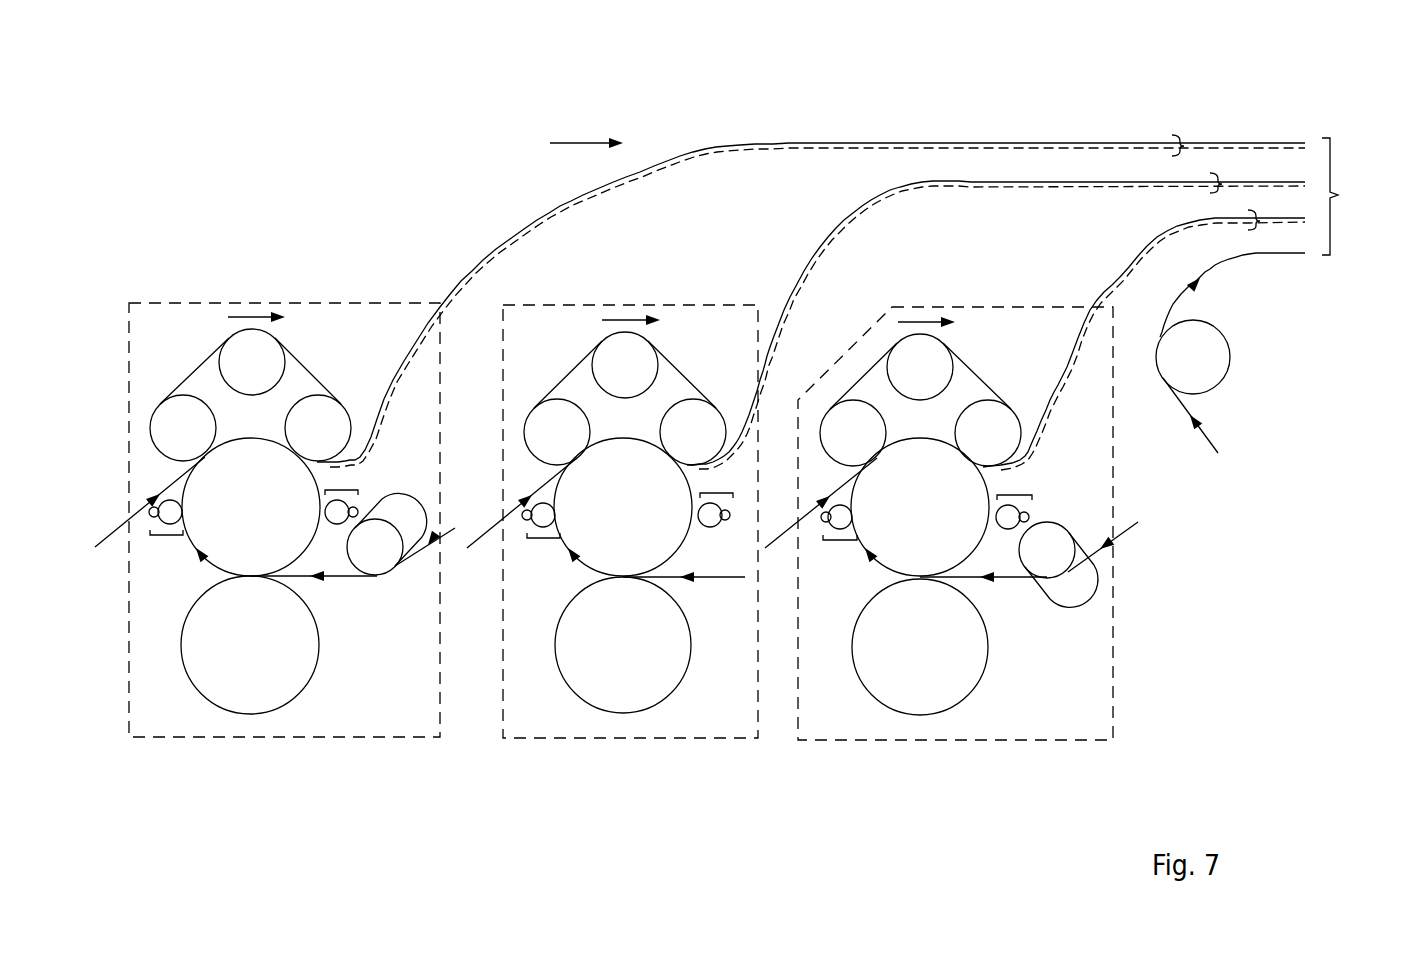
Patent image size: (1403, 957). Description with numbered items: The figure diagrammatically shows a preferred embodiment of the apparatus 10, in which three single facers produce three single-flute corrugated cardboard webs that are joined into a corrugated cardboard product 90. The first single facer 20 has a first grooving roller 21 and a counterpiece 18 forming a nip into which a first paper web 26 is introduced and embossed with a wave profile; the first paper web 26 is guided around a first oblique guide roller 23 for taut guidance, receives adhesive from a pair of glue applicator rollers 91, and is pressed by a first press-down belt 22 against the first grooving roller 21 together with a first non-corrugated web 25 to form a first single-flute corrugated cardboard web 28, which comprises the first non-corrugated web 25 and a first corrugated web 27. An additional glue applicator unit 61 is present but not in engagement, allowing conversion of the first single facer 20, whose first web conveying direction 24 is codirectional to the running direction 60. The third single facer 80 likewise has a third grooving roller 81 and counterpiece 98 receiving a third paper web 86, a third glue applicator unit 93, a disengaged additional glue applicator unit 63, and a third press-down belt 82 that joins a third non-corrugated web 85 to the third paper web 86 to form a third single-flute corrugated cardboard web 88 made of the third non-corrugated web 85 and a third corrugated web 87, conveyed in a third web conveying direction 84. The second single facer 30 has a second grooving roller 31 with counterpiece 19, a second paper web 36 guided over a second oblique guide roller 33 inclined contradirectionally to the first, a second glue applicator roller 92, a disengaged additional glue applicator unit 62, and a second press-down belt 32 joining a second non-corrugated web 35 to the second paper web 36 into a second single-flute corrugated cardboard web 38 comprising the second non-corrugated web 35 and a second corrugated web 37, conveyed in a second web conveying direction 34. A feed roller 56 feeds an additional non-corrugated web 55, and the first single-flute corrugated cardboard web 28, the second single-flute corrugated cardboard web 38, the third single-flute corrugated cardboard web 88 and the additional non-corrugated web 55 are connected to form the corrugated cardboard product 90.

The apparatus 10 is at (175, 252).
The counterpiece 18 is at (238, 658).
The counterpiece 19 is at (908, 660).
The first single facer 20 is at (272, 752).
The first grooving roller 21 is at (239, 520).
The first press-down belt 22 is at (195, 368).
The first oblique guide roller 23 is at (363, 560).
The first web conveying direction 24 is at (250, 310).
The first non-corrugated web 25 is at (148, 490).
The first paper web 26 is at (430, 556).
The first corrugated web 27 is at (690, 162).
The first single-flute corrugated cardboard web 28 is at (1184, 146).
The second single facer 30 is at (941, 752).
The second grooving roller 31 is at (908, 520).
The second press-down belt 32 is at (862, 372).
The second oblique guide roller 33 is at (1035, 563).
The second web conveying direction 34 is at (919, 312).
The second non-corrugated web 35 is at (818, 492).
The second paper web 36 is at (1130, 528).
The second corrugated web 37 is at (1112, 278).
The second single-flute corrugated cardboard web 38 is at (1260, 221).
The additional non-corrugated web 55 is at (1245, 258).
The feed roller 56 is at (1181, 370).
The running direction 60 is at (578, 140).
The additional glue applicator unit 61 is at (345, 490).
The additional glue applicator unit 62 is at (1012, 495).
The additional glue applicator unit 63 is at (715, 493).
The third single facer 80 is at (644, 752).
The third grooving roller 81 is at (611, 520).
The third press-down belt 82 is at (567, 370).
The third web conveying direction 84 is at (622, 312).
The third non-corrugated web 85 is at (523, 492).
The third paper web 86 is at (718, 580).
The third corrugated web 87 is at (824, 258).
The third single-flute corrugated cardboard web 88 is at (1222, 184).
The corrugated cardboard product 90 is at (1338, 195).
The pair of glue applicator rollers 91 is at (166, 535).
The second glue applicator roller 92 is at (840, 540).
The third glue applicator unit 93 is at (543, 538).
The counterpiece 98 is at (611, 658).